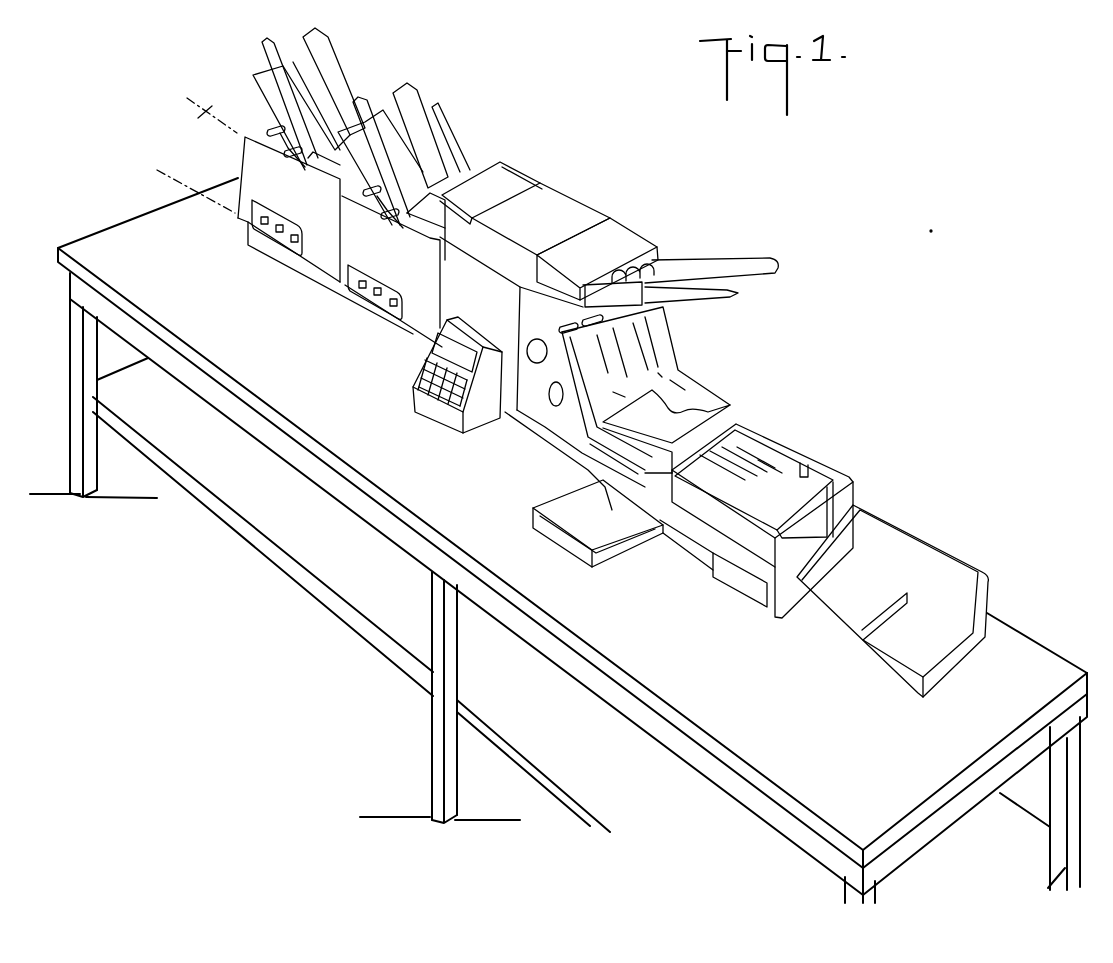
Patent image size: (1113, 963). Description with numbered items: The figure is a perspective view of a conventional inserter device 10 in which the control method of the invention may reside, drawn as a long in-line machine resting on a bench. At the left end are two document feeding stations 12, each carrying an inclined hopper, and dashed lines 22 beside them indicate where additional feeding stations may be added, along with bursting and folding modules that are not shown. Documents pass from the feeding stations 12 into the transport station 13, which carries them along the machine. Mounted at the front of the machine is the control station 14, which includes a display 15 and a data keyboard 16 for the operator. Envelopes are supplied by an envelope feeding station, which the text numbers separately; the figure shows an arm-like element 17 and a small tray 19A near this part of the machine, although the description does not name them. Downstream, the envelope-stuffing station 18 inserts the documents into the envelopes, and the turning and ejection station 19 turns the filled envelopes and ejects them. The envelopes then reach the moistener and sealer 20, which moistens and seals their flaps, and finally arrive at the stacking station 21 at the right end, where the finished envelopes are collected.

The inserter device 10 is at (722, 224).
The document feeding stations 12 is at (353, 70).
The transport station 13 is at (592, 208).
The control station 14 is at (410, 385).
The display 15 is at (457, 333).
The data keyboard 16 is at (455, 412).
The feed arm 17 is at (757, 257).
The envelope-stuffing station 18 is at (675, 340).
The turning and ejection station 19 is at (738, 403).
The tray 19A is at (613, 552).
The moistener and sealer 20 is at (805, 443).
The stacking station 21 is at (932, 545).
The dashed lines 22 is at (205, 113).